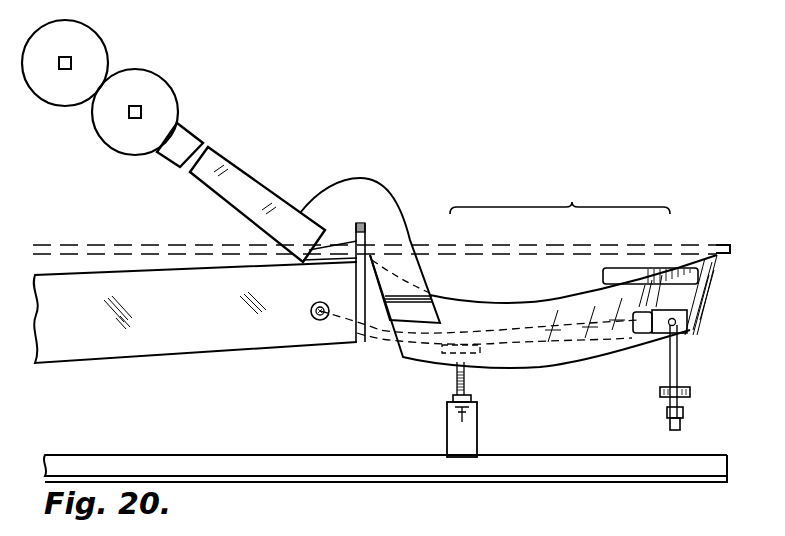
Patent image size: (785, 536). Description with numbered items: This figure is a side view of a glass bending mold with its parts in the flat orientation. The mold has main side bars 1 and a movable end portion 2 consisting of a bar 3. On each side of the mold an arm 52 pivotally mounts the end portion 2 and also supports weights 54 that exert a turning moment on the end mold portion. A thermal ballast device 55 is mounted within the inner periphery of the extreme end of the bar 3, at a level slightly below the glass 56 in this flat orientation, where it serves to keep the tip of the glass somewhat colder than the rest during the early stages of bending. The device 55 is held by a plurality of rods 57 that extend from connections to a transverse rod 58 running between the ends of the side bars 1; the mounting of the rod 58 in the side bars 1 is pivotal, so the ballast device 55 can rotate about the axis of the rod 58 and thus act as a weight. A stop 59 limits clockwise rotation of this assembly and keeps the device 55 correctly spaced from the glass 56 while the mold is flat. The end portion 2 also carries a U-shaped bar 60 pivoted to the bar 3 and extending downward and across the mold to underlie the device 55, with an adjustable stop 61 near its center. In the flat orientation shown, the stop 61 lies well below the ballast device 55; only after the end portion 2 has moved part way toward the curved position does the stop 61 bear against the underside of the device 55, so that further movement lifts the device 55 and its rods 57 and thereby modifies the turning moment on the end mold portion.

The side bars 1 is at (175, 351).
The movable end portion 2 is at (572, 207).
The bar 3 is at (567, 357).
The arm 52 is at (246, 184).
The weights 54 is at (130, 78).
The thermal ballast device 55 is at (609, 276).
The glass 56 is at (705, 246).
The rods 57 is at (373, 342).
The transverse rod 58 is at (316, 319).
The stop 59 is at (478, 360).
The U-shaped bar 60 is at (683, 348).
The adjustable stop 61 is at (686, 393).